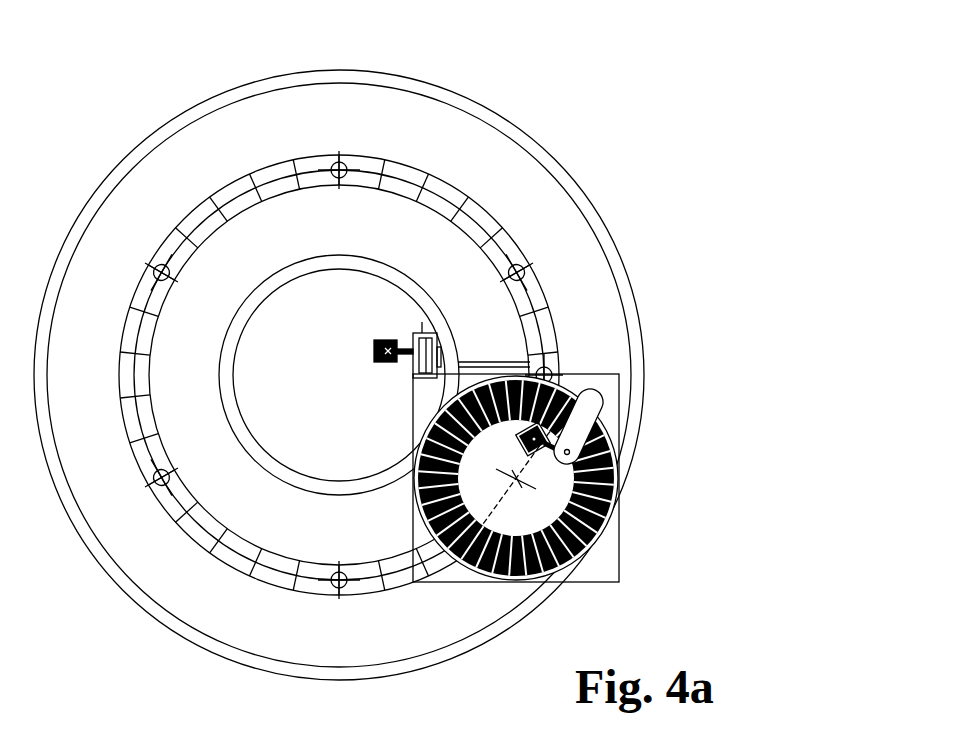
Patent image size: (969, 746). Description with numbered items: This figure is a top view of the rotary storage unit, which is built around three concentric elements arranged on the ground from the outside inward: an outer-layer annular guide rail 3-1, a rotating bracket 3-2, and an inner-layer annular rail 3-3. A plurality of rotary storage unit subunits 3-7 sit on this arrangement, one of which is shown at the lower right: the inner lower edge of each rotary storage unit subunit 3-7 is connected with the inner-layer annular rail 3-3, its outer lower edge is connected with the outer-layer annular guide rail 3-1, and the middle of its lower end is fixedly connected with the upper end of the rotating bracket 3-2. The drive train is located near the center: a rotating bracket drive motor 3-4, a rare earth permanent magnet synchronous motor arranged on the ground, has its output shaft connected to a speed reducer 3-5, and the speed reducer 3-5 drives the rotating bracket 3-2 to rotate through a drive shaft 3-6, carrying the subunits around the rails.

The outer-layer annular guide rail 3-1 is at (339, 348).
The rotating bracket 3-2 is at (341, 308).
The inner-layer annular rail 3-3 is at (339, 256).
The rotating bracket drive motor 3-4 is at (399, 189).
The speed reducer 3-5 is at (451, 197).
The drive shaft 3-6 is at (506, 192).
The rotary storage unit subunit 3-7 is at (523, 299).